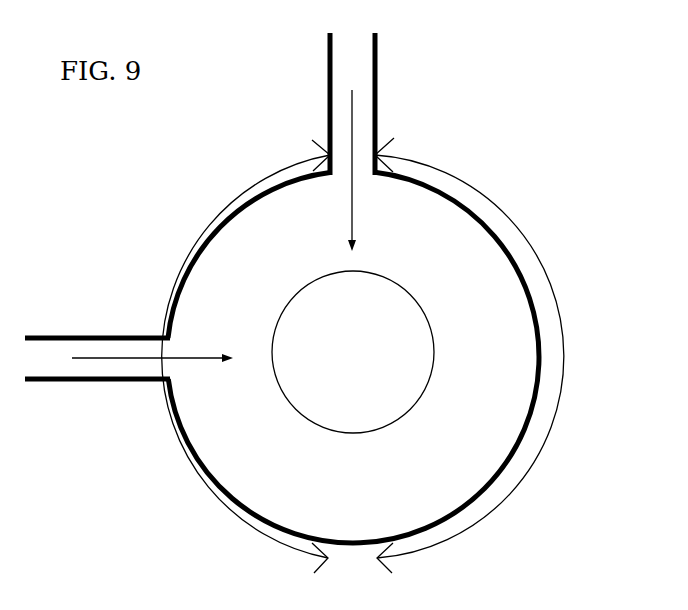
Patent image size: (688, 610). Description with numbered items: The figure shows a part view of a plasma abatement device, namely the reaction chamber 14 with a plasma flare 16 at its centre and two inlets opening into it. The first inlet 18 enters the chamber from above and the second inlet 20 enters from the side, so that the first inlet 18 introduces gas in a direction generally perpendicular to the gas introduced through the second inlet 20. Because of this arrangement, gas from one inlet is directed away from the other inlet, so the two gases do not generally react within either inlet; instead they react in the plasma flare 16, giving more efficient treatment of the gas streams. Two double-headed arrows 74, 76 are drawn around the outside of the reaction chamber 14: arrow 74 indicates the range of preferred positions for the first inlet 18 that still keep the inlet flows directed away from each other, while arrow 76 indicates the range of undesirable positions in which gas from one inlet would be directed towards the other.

The reaction chamber 14 is at (494, 234).
The plasma flare 16 is at (340, 358).
The first inlet 18 is at (377, 134).
The second inlet 20 is at (121, 338).
The double-headed arrow 74 is at (172, 443).
The double-headed arrow 76 is at (545, 445).